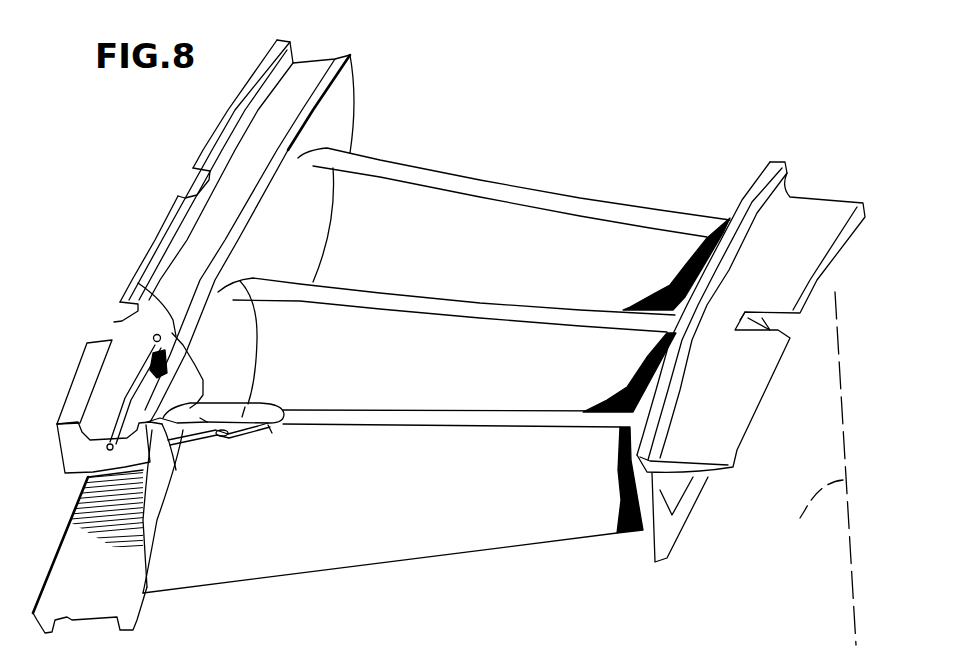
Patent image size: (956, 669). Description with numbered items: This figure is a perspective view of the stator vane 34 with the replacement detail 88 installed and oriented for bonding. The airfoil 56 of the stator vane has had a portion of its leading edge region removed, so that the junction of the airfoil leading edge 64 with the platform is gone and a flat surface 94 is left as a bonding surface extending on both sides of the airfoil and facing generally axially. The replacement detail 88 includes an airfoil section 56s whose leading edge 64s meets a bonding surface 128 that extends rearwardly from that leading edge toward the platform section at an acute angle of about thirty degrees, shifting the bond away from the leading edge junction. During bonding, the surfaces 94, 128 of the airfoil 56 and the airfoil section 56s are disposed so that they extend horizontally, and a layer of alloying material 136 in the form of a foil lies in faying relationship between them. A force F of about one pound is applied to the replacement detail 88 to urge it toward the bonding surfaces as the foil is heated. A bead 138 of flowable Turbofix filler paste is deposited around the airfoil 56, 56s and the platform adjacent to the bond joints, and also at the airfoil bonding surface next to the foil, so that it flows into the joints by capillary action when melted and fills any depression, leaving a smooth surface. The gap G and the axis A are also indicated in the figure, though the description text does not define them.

The stator vane 34 is at (640, 152).
The airfoil 56 is at (513, 532).
The airfoil leading edge 64 is at (450, 433).
The airfoil section 56s is at (262, 413).
The leading edge of the airfoil section 64s is at (200, 418).
The layer of alloying material 136 is at (245, 407).
The bead of bonding filler material 138 is at (197, 363).
The flat surface 94 is at (268, 425).
The bonding surface 128 is at (182, 453).
The replacement detail 88 is at (64, 360).
The force F is at (72, 325).
The gap G is at (172, 338).
The axis A is at (823, 468).